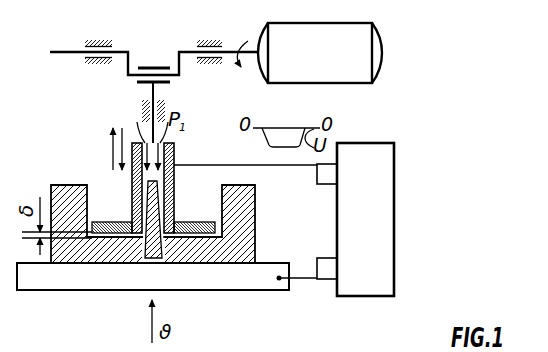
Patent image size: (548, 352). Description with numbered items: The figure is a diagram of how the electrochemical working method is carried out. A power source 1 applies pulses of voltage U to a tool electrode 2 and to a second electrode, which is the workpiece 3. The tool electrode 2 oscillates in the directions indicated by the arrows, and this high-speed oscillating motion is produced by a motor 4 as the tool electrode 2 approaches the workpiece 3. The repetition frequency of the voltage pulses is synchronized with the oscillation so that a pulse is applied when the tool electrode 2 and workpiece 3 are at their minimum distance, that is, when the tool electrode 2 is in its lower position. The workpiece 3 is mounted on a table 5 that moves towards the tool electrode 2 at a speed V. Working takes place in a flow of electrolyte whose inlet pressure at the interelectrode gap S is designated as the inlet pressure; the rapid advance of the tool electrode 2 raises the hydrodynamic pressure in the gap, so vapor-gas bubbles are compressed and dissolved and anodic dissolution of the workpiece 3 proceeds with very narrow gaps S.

The power source 1 is at (406, 213).
The tool electrode 2 is at (187, 142).
The workpiece 3 is at (66, 185).
The motor 4 is at (343, 68).
The table 5 is at (235, 283).